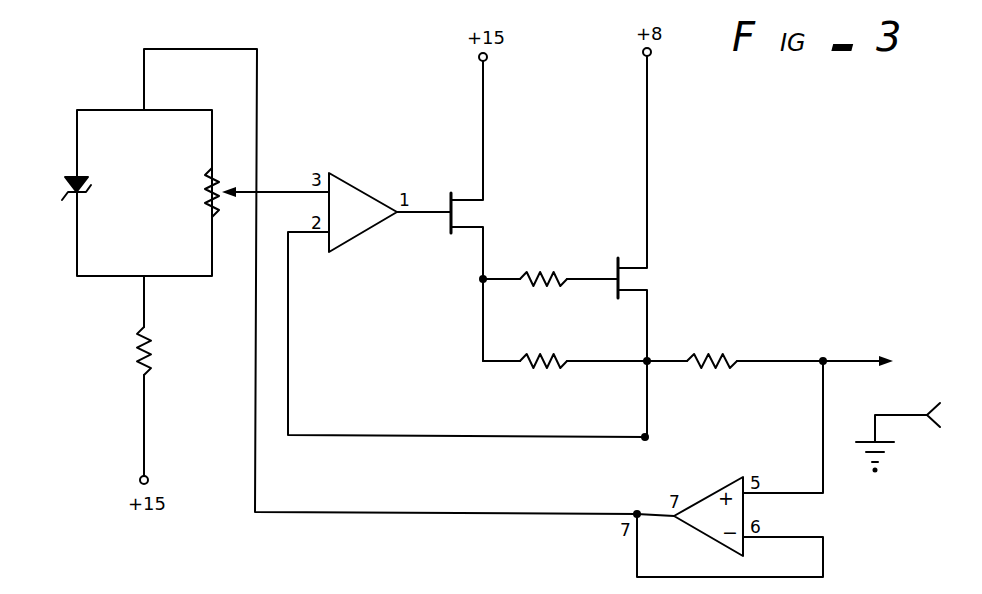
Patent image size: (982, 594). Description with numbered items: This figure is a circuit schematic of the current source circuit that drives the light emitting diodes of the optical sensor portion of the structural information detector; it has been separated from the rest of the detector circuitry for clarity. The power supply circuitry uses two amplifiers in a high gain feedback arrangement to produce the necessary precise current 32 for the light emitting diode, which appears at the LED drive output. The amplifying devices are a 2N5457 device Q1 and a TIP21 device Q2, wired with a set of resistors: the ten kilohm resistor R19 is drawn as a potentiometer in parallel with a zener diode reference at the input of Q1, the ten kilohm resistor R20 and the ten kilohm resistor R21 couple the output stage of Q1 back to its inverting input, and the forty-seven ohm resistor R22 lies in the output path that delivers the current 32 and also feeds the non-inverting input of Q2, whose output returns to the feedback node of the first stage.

The current 32 is at (856, 361).
The resistor R19 is at (194, 192).
The resistor R20 is at (550, 269).
The resistor R21 is at (565, 351).
The resistor R22 is at (735, 351).
The transistor Q1 is at (363, 212).
The transistor Q2 is at (708, 516).